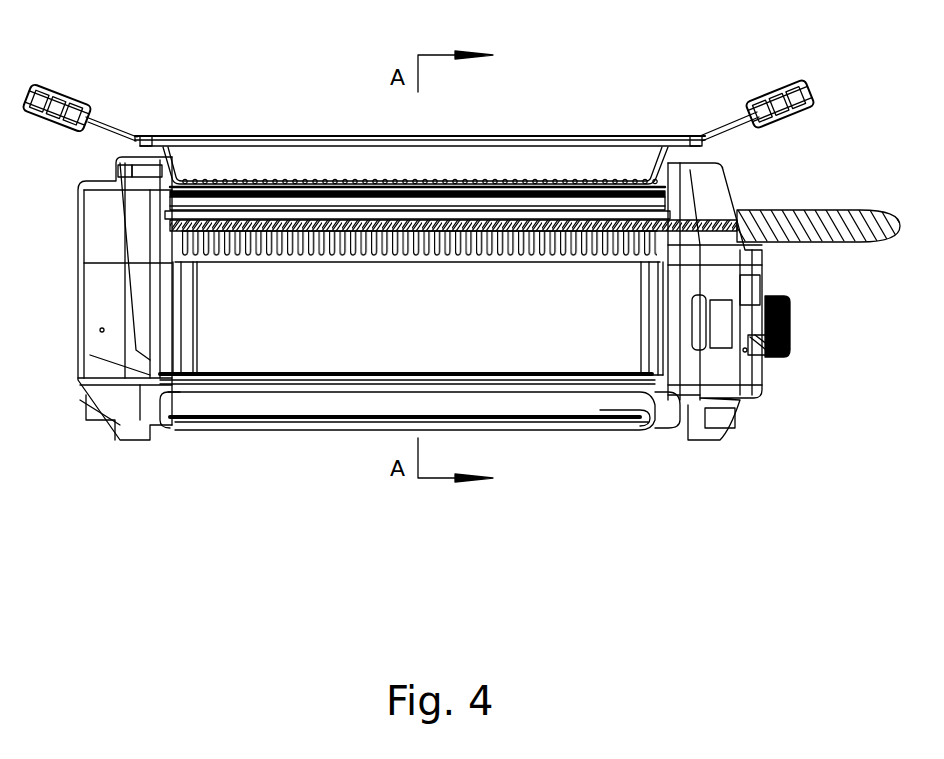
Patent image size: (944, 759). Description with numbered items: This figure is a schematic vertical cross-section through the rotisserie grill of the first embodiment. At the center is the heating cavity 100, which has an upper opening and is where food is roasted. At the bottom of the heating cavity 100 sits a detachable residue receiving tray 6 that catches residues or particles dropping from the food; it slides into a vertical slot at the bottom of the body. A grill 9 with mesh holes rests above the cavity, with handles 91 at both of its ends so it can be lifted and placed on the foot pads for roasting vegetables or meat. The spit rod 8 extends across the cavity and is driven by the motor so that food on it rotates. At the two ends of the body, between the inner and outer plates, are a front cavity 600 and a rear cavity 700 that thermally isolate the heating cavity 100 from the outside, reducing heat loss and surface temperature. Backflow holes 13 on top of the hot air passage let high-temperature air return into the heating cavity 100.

The grill 9 is at (281, 160).
The backflow holes 13 is at (500, 237).
The handles 91 is at (772, 93).
The spit rod 8 is at (793, 218).
The front cavity 600 is at (113, 335).
The rear cavity 700 is at (705, 250).
The heating cavity 100 is at (327, 333).
The residue receiving tray 6 is at (640, 417).